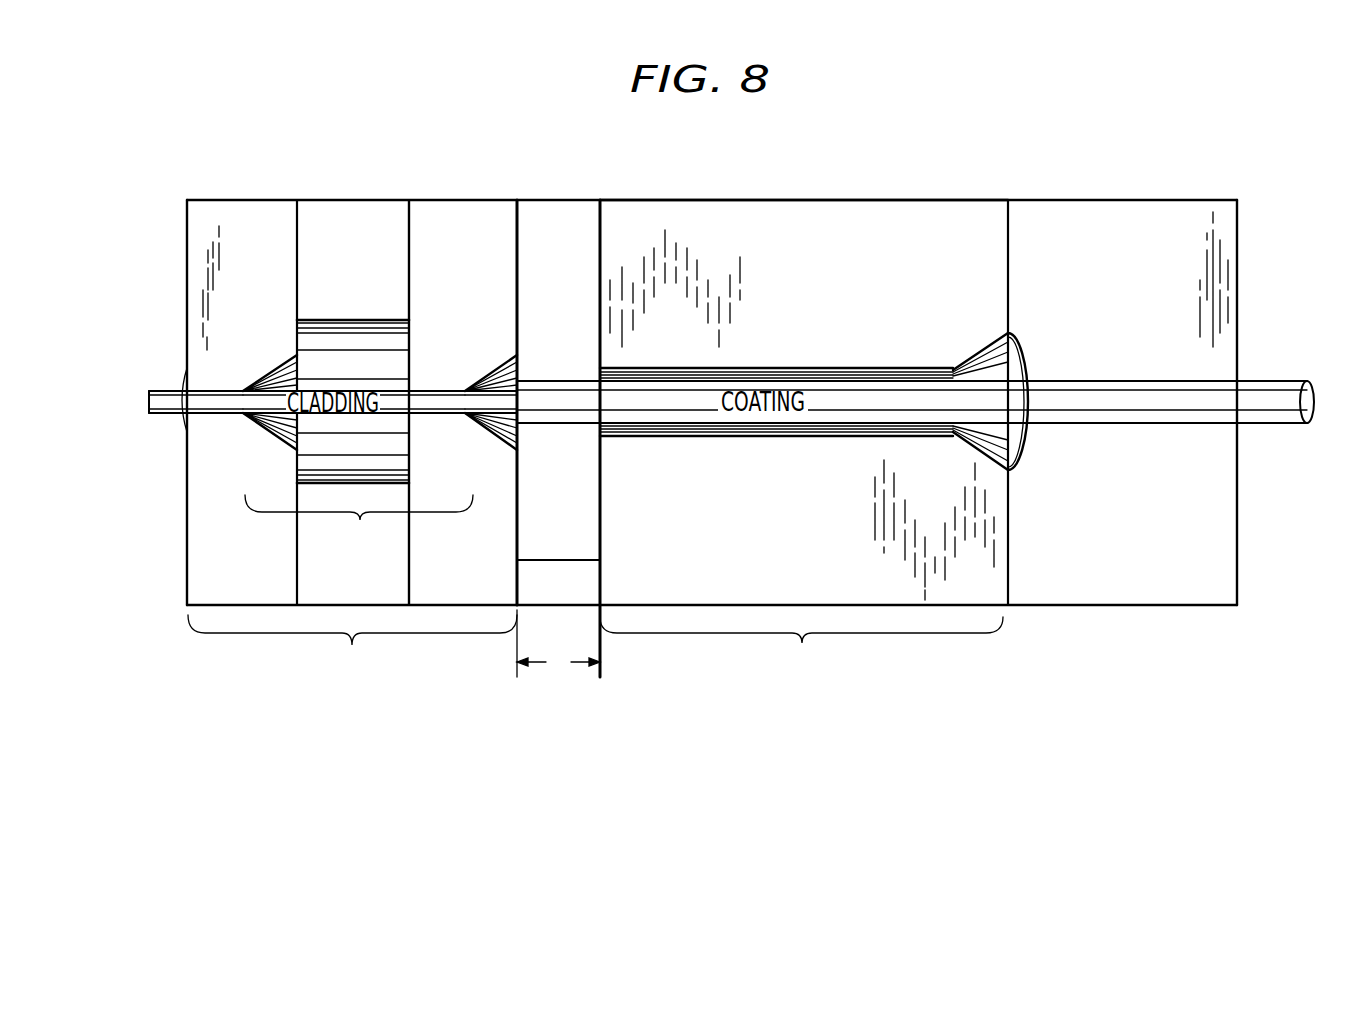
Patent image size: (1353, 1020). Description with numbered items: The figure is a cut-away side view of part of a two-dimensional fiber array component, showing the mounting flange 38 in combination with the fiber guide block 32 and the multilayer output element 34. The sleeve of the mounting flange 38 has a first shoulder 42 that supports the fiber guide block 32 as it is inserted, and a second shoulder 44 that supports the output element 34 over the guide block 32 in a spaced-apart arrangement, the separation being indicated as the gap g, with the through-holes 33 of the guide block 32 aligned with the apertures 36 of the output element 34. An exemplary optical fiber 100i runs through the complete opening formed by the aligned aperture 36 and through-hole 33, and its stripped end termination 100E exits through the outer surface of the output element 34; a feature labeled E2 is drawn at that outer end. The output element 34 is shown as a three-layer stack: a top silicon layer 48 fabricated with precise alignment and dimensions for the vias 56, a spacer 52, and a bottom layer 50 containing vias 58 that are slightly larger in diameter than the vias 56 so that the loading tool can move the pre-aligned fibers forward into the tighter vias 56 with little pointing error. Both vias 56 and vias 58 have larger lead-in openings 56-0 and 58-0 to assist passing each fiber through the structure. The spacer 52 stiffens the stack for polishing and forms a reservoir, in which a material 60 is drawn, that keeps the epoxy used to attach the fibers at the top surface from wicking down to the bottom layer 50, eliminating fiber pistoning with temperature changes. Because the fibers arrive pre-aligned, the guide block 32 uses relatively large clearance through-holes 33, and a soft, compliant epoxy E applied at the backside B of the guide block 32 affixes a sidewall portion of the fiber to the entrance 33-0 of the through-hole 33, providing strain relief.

The top silicon layer 48 is at (187, 228).
The spacer 52 is at (350, 208).
The bottom layer 50 is at (459, 206).
The second shoulder 44 is at (558, 207).
The index-matching/fill material 60 is at (352, 320).
The vias 56 is at (220, 418).
The lead-in opening 56-0 is at (281, 373).
The vias 58 is at (438, 390).
The lead-in opening 58-0 is at (509, 371).
The stripped end termination 100E is at (180, 392).
The end face E2 is at (181, 418).
The apertures 36 is at (347, 559).
The multilayer output element 34 is at (339, 679).
The gap distance g is at (558, 643).
The through-holes 33 is at (790, 367).
The entrance 33-0 is at (1005, 358).
The backside B is at (1008, 230).
The epoxy E is at (1022, 446).
The first shoulder 42 is at (1008, 567).
The mounting flange 38 is at (1166, 590).
The optical fiber 100i is at (1270, 385).
The fiber guide block 32 is at (801, 649).